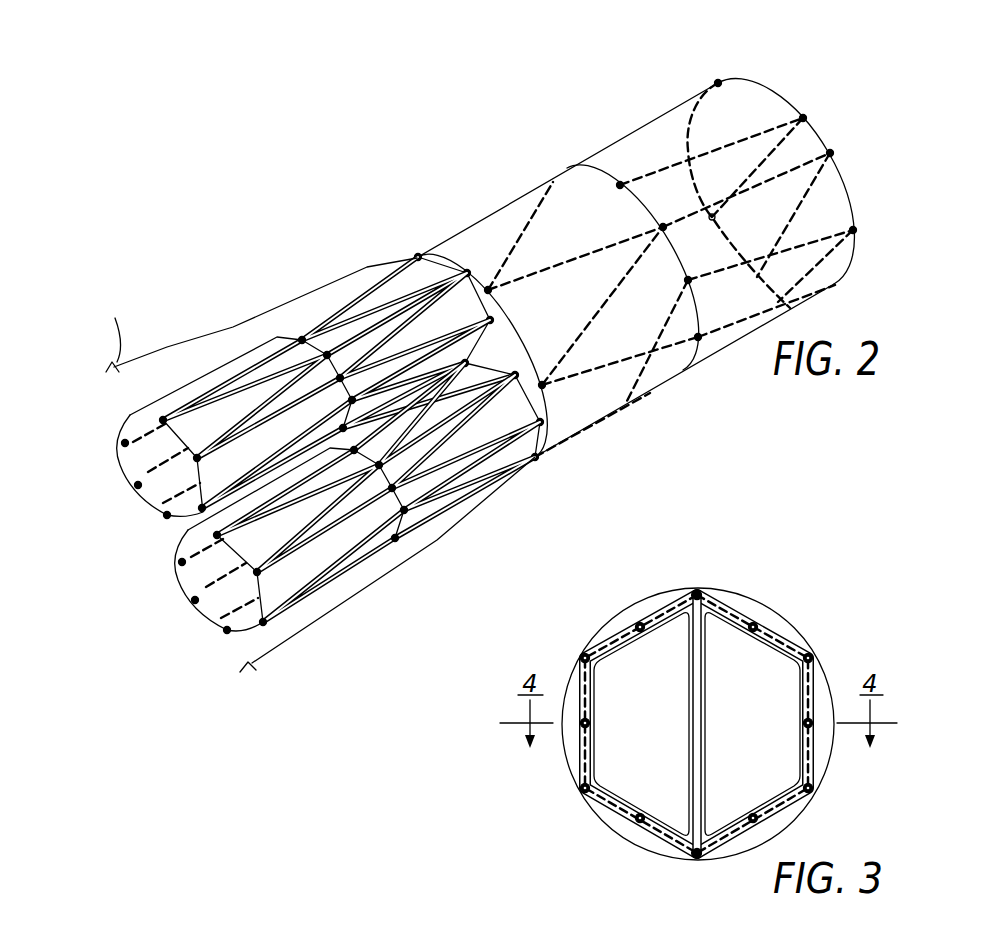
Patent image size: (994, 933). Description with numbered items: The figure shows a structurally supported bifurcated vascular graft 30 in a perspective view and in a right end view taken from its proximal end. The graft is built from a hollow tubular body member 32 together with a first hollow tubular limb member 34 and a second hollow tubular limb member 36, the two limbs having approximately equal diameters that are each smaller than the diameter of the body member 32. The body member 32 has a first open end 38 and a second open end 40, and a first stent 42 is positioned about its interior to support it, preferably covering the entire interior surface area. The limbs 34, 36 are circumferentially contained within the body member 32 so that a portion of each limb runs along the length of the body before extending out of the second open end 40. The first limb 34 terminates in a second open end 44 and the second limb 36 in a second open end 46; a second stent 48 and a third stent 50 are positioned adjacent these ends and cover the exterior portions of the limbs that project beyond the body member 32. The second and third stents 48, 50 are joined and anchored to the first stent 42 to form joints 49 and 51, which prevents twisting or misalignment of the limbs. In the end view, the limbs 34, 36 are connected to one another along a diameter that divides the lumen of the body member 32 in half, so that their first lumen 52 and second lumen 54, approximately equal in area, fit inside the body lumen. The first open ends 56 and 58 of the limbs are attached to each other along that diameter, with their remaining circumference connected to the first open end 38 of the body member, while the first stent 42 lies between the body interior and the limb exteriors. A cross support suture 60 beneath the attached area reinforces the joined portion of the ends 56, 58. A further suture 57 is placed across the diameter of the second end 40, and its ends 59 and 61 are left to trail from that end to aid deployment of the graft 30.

In FIG. 2, the bifurcated vascular graft 30 is at (424, 132).
In FIG. 2, the hollow tubular body member 32 is at (615, 157).
In FIG. 3, the hollow tubular body member 32 is at (760, 607).
In FIG. 2, the first hollow tubular limb member 34 is at (308, 408).
In FIG. 3, the first hollow tubular limb member 34 is at (683, 737).
In FIG. 2, the second hollow tubular limb member 36 is at (353, 555).
In FIG. 3, the second hollow tubular limb member 36 is at (705, 748).
In FIG. 2, the first open end 38 is at (797, 95).
In FIG. 3, the first open end 38 is at (815, 624).
In FIG. 2, the second open end 40 is at (527, 372).
In FIG. 2, the first stent 42 is at (620, 185).
In FIG. 3, the first stent 42 is at (612, 640).
In FIG. 2, the second open end 44 is at (147, 497).
In FIG. 2, the second open end 46 is at (220, 612).
In FIG. 2, the second stent 48 is at (212, 393).
In FIG. 2, the joint 49 is at (415, 257).
In FIG. 2, the third stent 50 is at (292, 560).
In FIG. 2, the joint 51 is at (538, 459).
In FIG. 3, the first lumen 52 is at (618, 722).
In FIG. 3, the second lumen 54 is at (765, 692).
In FIG. 3, the first open end 56 is at (590, 743).
In FIG. 2, the suture 57 is at (545, 403).
In FIG. 3, the first open end 58 is at (800, 750).
In FIG. 2, the end of suture 59 is at (254, 315).
In FIG. 3, the support suture 60 is at (693, 680).
In FIG. 2, the end of suture 61 is at (362, 593).